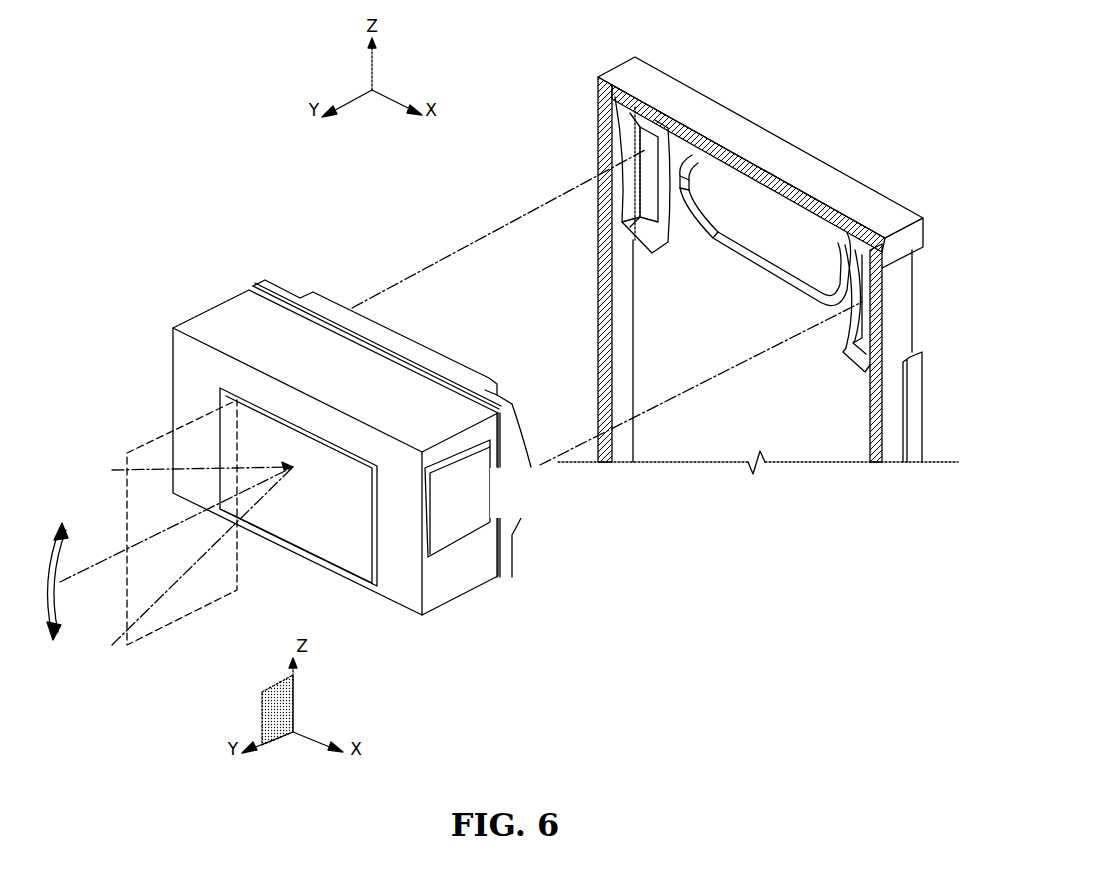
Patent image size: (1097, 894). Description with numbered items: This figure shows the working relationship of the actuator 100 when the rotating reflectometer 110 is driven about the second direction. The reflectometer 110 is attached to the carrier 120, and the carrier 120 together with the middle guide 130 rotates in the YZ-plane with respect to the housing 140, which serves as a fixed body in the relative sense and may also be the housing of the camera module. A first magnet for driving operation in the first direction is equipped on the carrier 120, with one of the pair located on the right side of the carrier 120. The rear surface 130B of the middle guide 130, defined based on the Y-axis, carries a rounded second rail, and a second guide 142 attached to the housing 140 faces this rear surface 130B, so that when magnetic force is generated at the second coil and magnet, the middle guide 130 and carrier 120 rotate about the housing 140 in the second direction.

The actuator 100 is at (256, 252).
The reflectometer 110 is at (323, 542).
The carrier 120 is at (223, 320).
The middle guide 130 is at (330, 310).
The rear surface 130B is at (548, 497).
The housing 140 is at (687, 102).
The second guide 142 is at (637, 150).